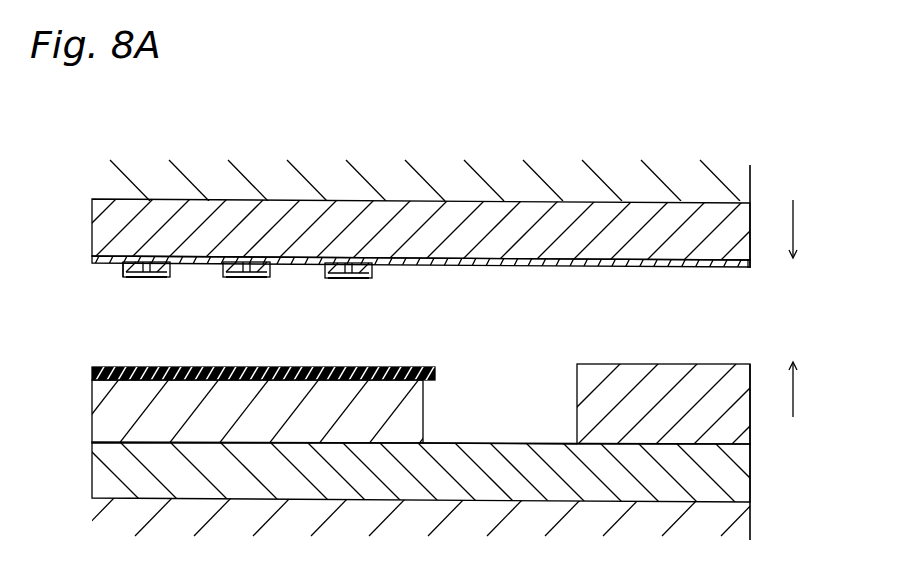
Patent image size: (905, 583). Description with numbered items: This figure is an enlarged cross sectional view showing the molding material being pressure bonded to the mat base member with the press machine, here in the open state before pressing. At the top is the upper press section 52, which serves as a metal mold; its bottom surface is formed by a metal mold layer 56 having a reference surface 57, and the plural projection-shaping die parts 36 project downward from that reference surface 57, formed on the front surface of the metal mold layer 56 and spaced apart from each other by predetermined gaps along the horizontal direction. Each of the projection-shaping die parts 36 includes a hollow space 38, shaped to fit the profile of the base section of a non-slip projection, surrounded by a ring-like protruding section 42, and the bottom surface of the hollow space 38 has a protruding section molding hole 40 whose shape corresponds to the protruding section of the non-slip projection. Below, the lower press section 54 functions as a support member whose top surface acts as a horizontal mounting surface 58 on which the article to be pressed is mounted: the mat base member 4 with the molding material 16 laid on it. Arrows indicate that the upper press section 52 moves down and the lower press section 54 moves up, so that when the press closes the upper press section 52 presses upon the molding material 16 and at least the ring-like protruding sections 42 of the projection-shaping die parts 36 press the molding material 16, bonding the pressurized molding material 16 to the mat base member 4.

The mat base member 4 is at (380, 411).
The molding material 16 is at (436, 371).
The projection-shaping die parts 36 is at (174, 273).
The hollow spaces 38 is at (161, 278).
The protruding section molding holes 40 is at (146, 280).
The ring-like protruding sections 42 is at (122, 276).
The upper press section 52 is at (754, 182).
The lower press section 54 is at (757, 459).
The metal mold layer 56 is at (751, 266).
The reference surface 57 is at (620, 268).
The mounting surface 58 is at (553, 443).